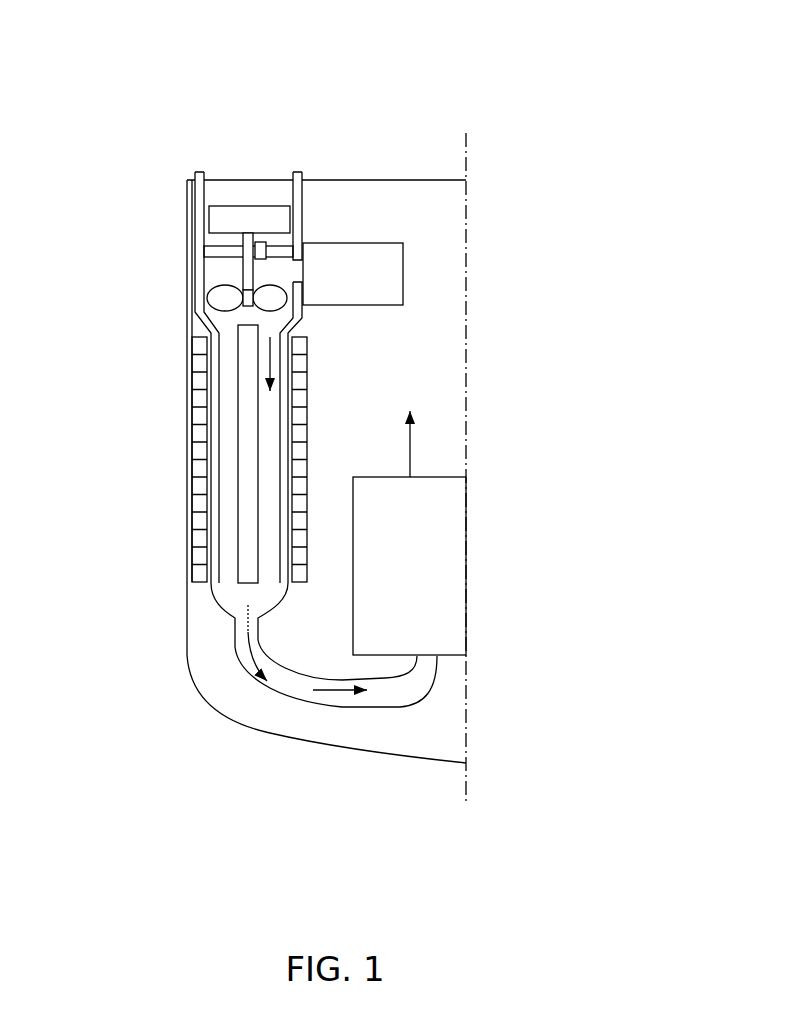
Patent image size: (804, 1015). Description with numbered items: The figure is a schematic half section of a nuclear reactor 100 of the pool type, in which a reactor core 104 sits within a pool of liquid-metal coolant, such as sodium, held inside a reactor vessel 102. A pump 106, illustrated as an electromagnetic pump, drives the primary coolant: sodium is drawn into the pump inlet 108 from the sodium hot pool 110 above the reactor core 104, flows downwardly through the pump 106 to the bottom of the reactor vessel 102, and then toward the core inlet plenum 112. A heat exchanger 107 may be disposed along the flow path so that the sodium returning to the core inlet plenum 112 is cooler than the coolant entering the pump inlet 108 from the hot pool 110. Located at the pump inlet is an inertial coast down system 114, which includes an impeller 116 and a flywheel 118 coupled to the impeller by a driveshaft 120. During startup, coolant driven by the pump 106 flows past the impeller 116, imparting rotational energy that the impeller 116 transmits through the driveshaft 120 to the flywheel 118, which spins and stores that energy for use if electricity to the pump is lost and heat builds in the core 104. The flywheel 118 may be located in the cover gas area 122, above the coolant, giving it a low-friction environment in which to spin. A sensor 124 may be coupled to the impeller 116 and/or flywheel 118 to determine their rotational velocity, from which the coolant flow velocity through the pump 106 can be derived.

The nuclear reactor 100 is at (375, 69).
The reactor vessel 102 is at (268, 732).
The reactor core 104 is at (430, 530).
The pump 106 is at (191, 417).
The heat exchanger 107 is at (395, 283).
The pump inlet 108 is at (305, 260).
The sodium hot pool 110 is at (305, 275).
The core inlet plenum 112 is at (430, 662).
The inertial coast down system 114 is at (229, 277).
The impeller 116 is at (227, 300).
The flywheel 118 is at (238, 226).
The driveshaft 120 is at (248, 267).
The cover gas area 122 is at (251, 194).
The sensor 124 is at (263, 250).